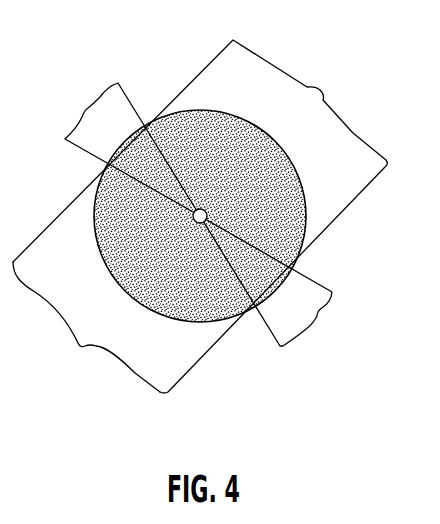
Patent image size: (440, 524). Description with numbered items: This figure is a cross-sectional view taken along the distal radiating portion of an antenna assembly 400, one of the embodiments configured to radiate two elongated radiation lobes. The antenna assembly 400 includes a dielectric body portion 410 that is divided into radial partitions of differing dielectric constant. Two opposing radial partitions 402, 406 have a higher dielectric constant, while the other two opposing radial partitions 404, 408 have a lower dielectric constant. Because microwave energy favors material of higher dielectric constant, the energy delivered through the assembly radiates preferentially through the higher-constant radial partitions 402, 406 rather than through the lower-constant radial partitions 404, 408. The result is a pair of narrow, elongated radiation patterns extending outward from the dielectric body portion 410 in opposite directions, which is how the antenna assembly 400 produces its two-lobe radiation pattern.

The antenna assembly 400 is at (315, 45).
The radial partition 402 is at (273, 285).
The radial partition 404 is at (200, 216).
The radial partition 406 is at (127, 148).
The radial partition 408 is at (86, 327).
The dielectric body portion 410 is at (122, 253).